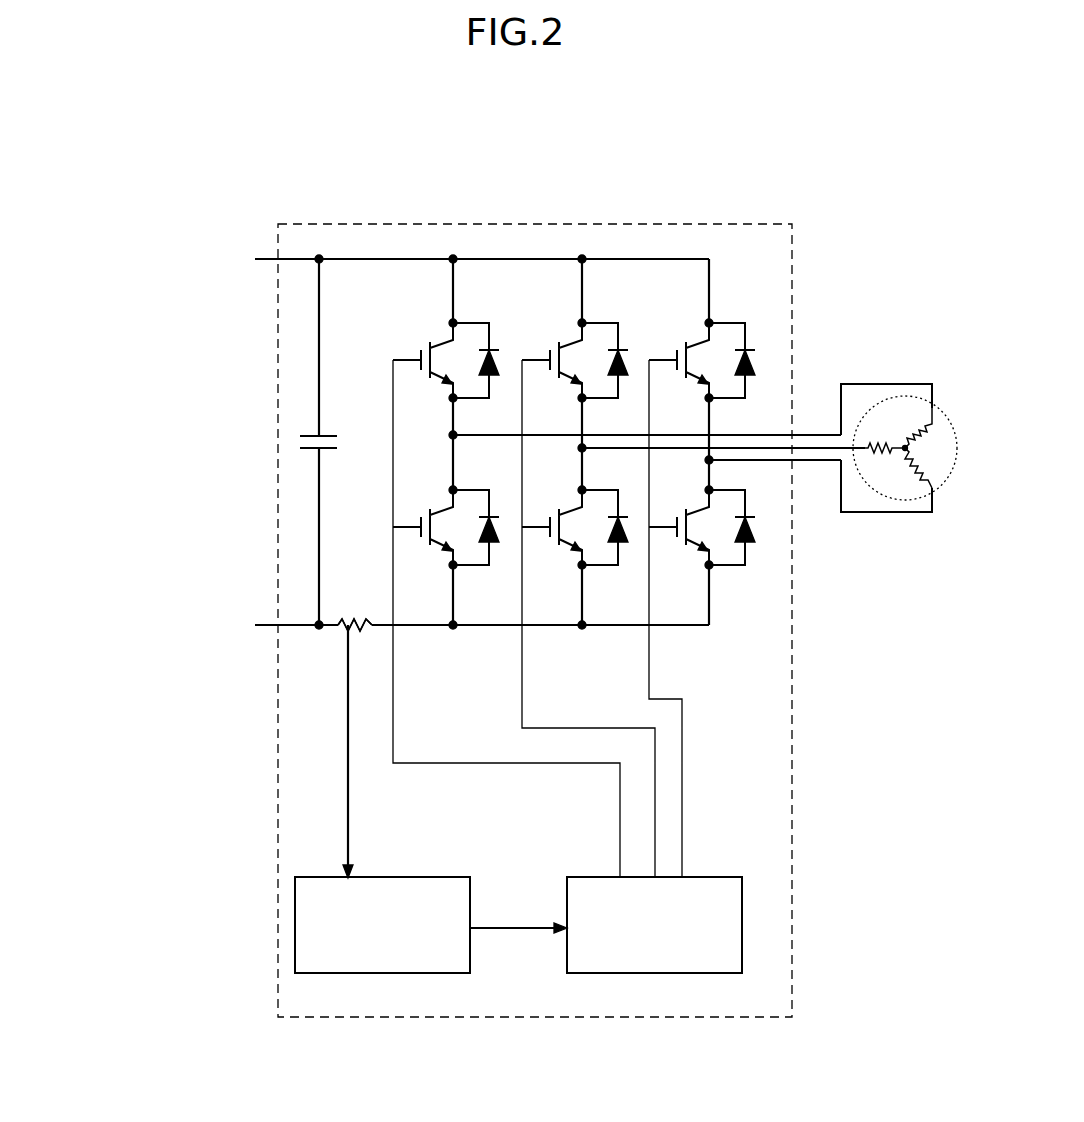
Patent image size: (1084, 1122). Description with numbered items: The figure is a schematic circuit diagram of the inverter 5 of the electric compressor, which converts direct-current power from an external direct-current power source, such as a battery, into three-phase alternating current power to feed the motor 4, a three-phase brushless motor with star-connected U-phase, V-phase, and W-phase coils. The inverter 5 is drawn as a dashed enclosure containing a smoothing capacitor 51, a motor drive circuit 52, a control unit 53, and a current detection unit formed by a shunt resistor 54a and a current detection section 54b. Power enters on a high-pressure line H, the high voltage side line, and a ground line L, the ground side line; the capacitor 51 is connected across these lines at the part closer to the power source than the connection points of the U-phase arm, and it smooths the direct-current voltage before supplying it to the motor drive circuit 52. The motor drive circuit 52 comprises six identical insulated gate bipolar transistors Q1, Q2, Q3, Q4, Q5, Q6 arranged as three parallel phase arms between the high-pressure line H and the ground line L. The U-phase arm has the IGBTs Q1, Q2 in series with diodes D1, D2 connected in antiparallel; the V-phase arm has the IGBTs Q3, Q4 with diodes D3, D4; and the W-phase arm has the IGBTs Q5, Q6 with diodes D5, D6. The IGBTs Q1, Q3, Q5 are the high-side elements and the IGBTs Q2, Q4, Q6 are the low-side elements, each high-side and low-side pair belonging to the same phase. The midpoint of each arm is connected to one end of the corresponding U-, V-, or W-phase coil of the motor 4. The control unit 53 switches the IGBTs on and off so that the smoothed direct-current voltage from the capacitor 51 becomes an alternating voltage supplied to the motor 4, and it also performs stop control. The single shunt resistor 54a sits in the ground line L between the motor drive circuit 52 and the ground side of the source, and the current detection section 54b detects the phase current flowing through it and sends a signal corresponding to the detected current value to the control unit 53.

The inverter 5 is at (232, 165).
The motor 4 is at (937, 410).
The smoothing capacitor 51 is at (312, 435).
The motor drive circuit 52 is at (412, 215).
The control unit 53 is at (685, 973).
The shunt resistor 54a is at (348, 622).
The current detection section 54b is at (373, 973).
The high-pressure line H is at (297, 259).
The ground line L is at (300, 628).
The IGBT Q1 is at (446, 365).
The IGBT Q2 is at (446, 532).
The IGBT Q3 is at (575, 365).
The IGBT Q4 is at (575, 532).
The IGBT Q5 is at (702, 365).
The IGBT Q6 is at (702, 532).
The diode D1 is at (505, 360).
The diode D2 is at (505, 527).
The diode D3 is at (634, 360).
The diode D4 is at (634, 527).
The diode D5 is at (761, 360).
The diode D6 is at (761, 527).